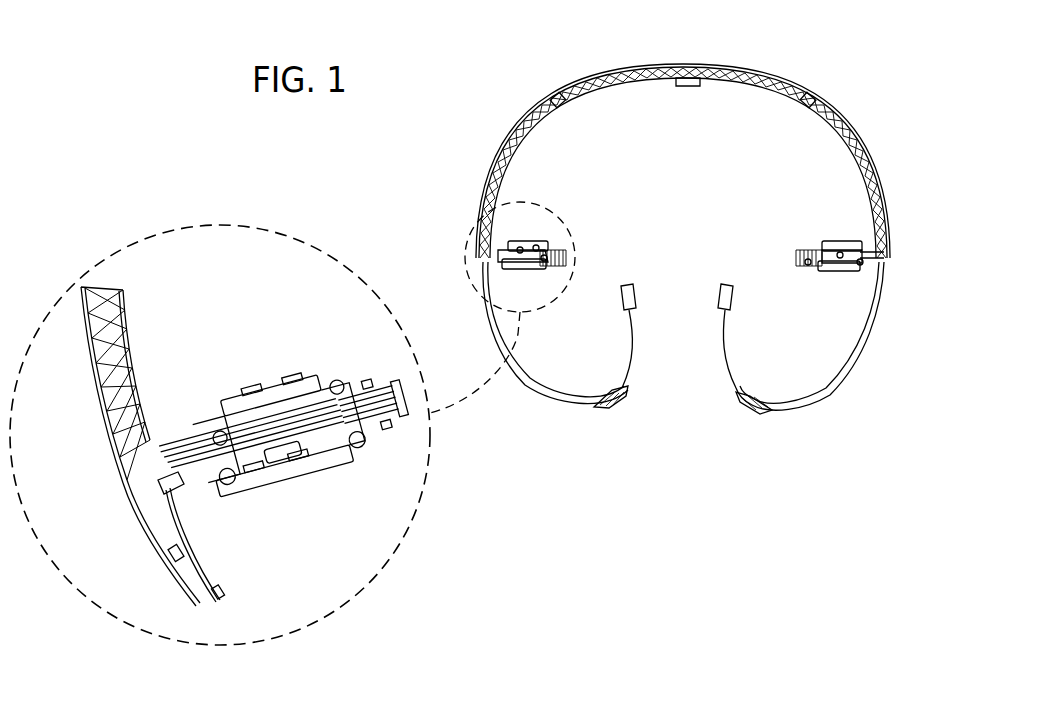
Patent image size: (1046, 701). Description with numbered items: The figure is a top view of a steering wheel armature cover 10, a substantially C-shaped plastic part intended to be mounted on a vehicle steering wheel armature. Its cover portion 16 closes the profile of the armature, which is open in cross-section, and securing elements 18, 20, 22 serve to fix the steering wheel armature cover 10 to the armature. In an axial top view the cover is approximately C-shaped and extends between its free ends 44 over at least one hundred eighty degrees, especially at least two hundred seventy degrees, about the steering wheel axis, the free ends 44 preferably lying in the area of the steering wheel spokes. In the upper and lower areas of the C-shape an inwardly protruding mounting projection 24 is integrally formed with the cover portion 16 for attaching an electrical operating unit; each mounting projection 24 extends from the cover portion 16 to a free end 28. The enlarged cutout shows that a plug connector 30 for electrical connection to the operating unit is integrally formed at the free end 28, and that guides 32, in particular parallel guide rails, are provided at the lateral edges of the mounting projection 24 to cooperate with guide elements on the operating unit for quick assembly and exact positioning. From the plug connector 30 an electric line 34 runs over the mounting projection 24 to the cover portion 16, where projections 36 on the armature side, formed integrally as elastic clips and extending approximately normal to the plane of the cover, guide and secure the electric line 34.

The steering wheel armature cover 10 is at (855, 95).
The cover portion 16 is at (600, 74).
The securing element 18 is at (684, 86).
The securing element 20 is at (780, 412).
The securing element 22 is at (806, 268).
The mounting projection 24 is at (538, 230).
The free end 28 is at (799, 249).
The plug connector 30 is at (372, 438).
The guides 32 is at (270, 393).
The electric line 34 is at (626, 336).
The projections 36 is at (172, 556).
The free ends 44 is at (628, 392).